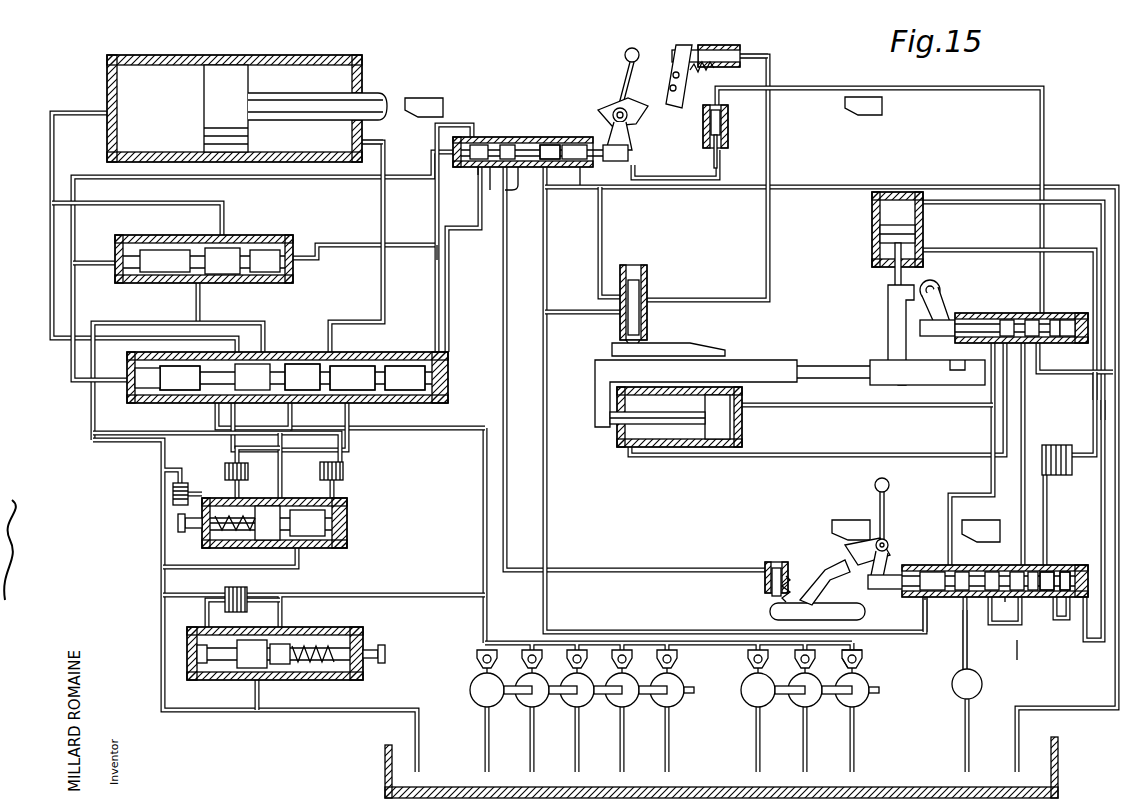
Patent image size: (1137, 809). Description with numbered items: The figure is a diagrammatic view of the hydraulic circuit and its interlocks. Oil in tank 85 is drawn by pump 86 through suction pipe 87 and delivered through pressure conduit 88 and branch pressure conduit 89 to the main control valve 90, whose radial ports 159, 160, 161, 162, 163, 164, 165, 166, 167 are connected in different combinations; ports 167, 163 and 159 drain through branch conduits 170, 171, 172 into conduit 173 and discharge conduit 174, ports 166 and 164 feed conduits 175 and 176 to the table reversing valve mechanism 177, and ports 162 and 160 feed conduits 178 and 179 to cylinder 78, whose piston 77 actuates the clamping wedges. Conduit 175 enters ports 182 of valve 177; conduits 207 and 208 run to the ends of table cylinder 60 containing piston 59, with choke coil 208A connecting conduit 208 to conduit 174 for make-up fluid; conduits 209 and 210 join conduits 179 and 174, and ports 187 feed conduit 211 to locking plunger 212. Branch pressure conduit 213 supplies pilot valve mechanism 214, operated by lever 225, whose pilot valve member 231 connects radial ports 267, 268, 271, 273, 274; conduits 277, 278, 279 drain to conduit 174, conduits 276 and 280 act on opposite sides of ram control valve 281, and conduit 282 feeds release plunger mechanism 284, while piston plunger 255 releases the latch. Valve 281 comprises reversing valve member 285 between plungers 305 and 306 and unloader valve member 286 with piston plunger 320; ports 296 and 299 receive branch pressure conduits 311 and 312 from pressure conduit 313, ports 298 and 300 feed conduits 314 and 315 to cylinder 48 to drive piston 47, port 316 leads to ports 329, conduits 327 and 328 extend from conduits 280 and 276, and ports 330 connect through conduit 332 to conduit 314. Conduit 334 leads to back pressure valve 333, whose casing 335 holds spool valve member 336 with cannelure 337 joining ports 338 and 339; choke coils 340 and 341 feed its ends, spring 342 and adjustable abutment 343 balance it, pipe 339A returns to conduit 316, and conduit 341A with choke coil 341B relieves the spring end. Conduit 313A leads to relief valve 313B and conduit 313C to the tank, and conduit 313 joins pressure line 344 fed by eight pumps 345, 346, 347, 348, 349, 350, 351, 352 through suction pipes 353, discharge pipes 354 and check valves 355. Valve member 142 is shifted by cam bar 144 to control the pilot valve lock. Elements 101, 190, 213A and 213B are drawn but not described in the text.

The piston 47 is at (226, 78).
The cylinder 48 is at (285, 70).
The piston 59 is at (728, 420).
The cylinder 60 is at (668, 447).
The piston 77 is at (880, 240).
The cylinder 78 is at (924, 226).
The tank 85 is at (1058, 785).
The pump 86 is at (952, 684).
The suction pipe 87 is at (970, 712).
The pressure pipe 88 is at (963, 658).
The branch pressure conduit 89 is at (1015, 660).
The valve mechanism 90 is at (1082, 565).
The hand lever 101 is at (884, 492).
The valve member 142 is at (640, 330).
The cam bar 144 is at (698, 348).
The radial ports 159 is at (1057, 565).
The radial ports 160 is at (1047, 565).
The radial ports 161 is at (1035, 565).
The radial ports 162 is at (998, 565).
The radial ports 163 is at (1005, 600).
The radial ports 164 is at (985, 566).
The radial ports 165 is at (965, 610).
The radial ports 166 is at (948, 566).
The radial ports 167 is at (922, 600).
The branch conduit 170 is at (925, 628).
The branch conduit 171 is at (995, 623).
The branch conduit 172 is at (1066, 618).
The conduit 173 is at (1103, 630).
The discharge conduit 174 is at (1117, 700).
The conduit 175 is at (990, 478).
The conduit 176 is at (1023, 492).
The table reversing valve mechanism 177 is at (975, 313).
The conduit 178 is at (1095, 416).
The conduit 179 is at (1103, 430).
The ports 182 is at (978, 343).
The ports 187 is at (1050, 312).
The valve land 190 is at (1062, 318).
The conduit 207 is at (940, 405).
The conduit 208 is at (1003, 438).
The choke coil 208A is at (1045, 466).
The conduit 209 is at (1095, 385).
The conduit 210 is at (1052, 378).
The conduit 211 is at (1042, 154).
The locking plunger 212 is at (722, 132).
The branch pressure conduit 213 is at (547, 538).
The conduit 213A is at (580, 312).
The conduit 213B is at (768, 290).
The pilot valve mechanism 214 is at (453, 153).
The manually actuating lever 225 is at (628, 68).
The pilot valve member 231 is at (470, 135).
The piston plunger 255 is at (718, 45).
The radial ports 267 is at (478, 170).
The radial ports 268 is at (490, 190).
The radial ports 271 is at (545, 137).
The radial ports 273 is at (565, 137).
The radial ports 274 is at (630, 168).
The conduit 276 is at (345, 180).
The conduit 277 is at (508, 205).
The conduit 278 is at (518, 185).
The conduit 279 is at (580, 185).
The conduit 280 is at (440, 250).
The ram control valve 281 is at (446, 352).
The conduit 282 is at (482, 226).
The release piston plunger mechanism 284 is at (778, 560).
The reversing valve member 285 is at (200, 400).
The unloader valve member 286 is at (243, 232).
The radial ports 296 is at (263, 333).
The radial ports 298 is at (272, 350).
The radial ports 299 is at (290, 405).
The radial ports 300 is at (330, 350).
The plunger 305 is at (420, 352).
The plunger 306 is at (152, 400).
The branch pressure conduit 311 is at (217, 417).
The branch pressure conduit 312 is at (292, 419).
The pressure conduit 313 is at (485, 488).
The conduit 313A is at (425, 595).
The relief valve 313B is at (363, 660).
The conduit 313C is at (260, 695).
The conduit 314 is at (50, 300).
The conduit 315 is at (386, 290).
The conduit 316 is at (240, 312).
The piston plunger 320 is at (360, 450).
The conduit 327 is at (425, 248).
The conduit 328 is at (105, 270).
The radial ports 329 is at (190, 283).
The radial ports 330 is at (208, 233).
The conduit 332 is at (160, 232).
The back pressure valve 333 is at (348, 500).
The conduit 334 is at (350, 436).
The casing 335 is at (340, 540).
The spool type valve member 336 is at (320, 524).
The cannelure 337 is at (283, 494).
The ports 338 is at (258, 494).
The ports 339 is at (303, 560).
The conduit 339A is at (170, 578).
The choke coil 340 is at (345, 470).
The choke coil 341 is at (225, 464).
The conduit 341A is at (188, 478).
The choke coil 341B is at (163, 470).
The spring 342 is at (262, 548).
The adjustable abutment 343 is at (232, 548).
The pressure line 344 is at (700, 645).
The pump 345 is at (480, 710).
The pump 346 is at (525, 710).
The pump 347 is at (570, 710).
The pump 348 is at (615, 710).
The pump 349 is at (660, 710).
The pump 350 is at (752, 710).
The pump 351 is at (798, 710).
The pump 352 is at (846, 710).
The suction pipe 353 is at (670, 770).
The discharge pipe 354 is at (865, 665).
The one-way check valve 355 is at (862, 652).